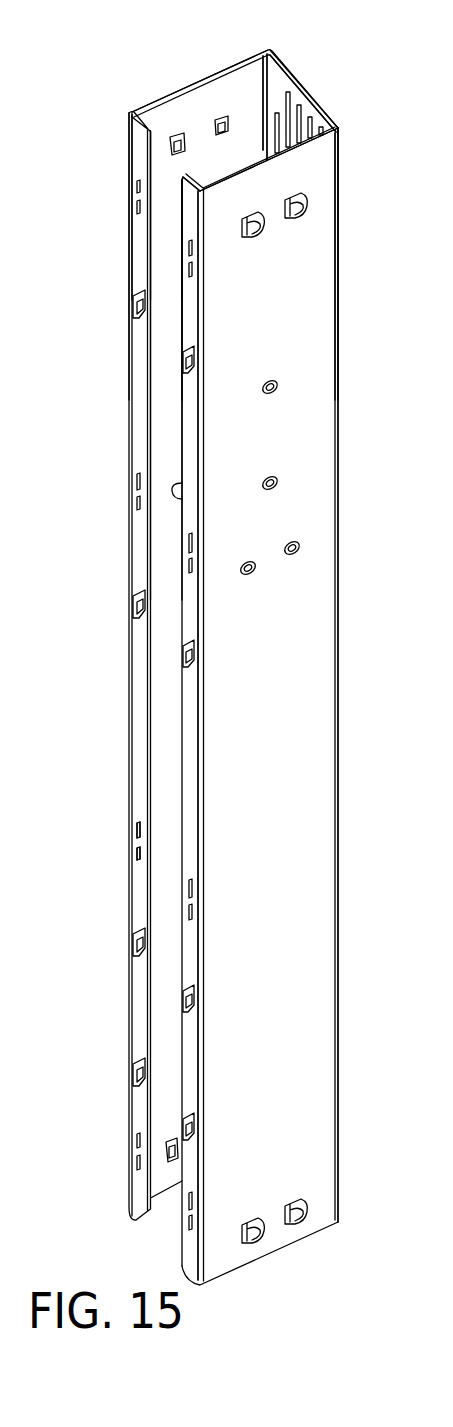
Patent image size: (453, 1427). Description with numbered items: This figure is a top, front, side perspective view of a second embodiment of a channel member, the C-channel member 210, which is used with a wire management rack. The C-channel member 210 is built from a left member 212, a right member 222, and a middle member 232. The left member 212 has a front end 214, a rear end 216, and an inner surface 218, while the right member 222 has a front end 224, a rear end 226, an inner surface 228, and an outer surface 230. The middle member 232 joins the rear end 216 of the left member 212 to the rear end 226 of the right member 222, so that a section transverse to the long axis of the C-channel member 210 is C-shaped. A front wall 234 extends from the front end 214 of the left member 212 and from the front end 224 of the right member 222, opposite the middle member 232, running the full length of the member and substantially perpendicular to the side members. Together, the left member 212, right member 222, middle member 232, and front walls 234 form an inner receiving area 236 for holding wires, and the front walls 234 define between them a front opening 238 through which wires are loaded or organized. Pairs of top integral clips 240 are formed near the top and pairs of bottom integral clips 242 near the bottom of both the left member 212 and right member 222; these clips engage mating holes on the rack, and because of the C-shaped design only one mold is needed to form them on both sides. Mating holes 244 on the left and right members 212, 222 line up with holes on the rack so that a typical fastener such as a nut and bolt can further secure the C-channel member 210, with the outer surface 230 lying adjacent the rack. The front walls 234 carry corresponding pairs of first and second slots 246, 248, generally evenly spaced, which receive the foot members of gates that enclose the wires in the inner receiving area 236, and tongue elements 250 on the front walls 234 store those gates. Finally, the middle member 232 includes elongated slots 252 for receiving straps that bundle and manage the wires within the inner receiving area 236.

The C-channel member 210 is at (130, 739).
The left member 212 is at (133, 112).
The front end 214 is at (130, 112).
The rear end 216 is at (243, 124).
The inner surface 218 is at (197, 103).
The right member 222 is at (327, 178).
The front end 224 is at (200, 194).
The rear end 226 is at (340, 130).
The inner surface 228 is at (310, 118).
The outer surface 230 is at (307, 312).
The middle member 232 is at (290, 73).
The front wall 234 is at (190, 325).
The inner receiving area 236 is at (268, 62).
The front opening 238 is at (190, 163).
The top integral clips 240 is at (258, 232).
The bottom integral clips 242 is at (258, 1240).
The mating holes 244 is at (278, 386).
The first slots 246 is at (137, 830).
The second slots 248 is at (187, 912).
The tongue elements 250 is at (185, 660).
The elongated slots 252 is at (293, 135).